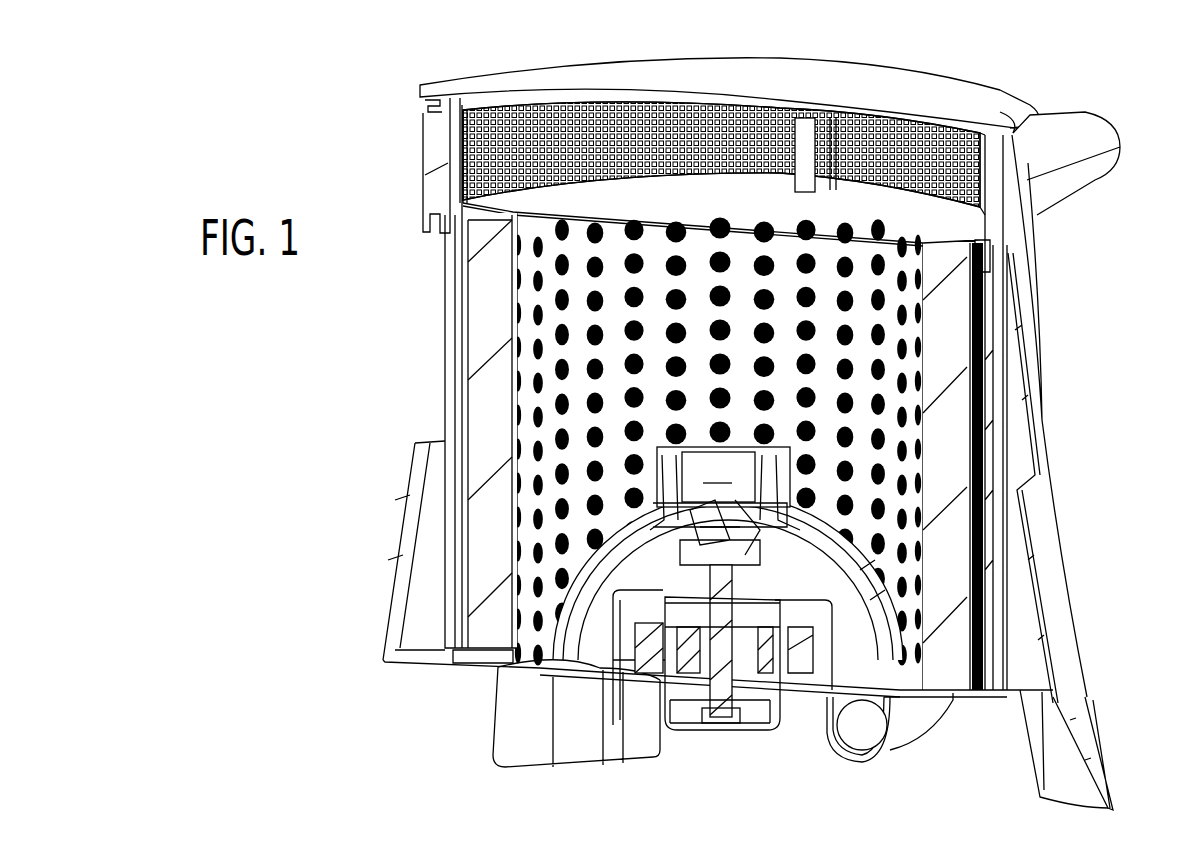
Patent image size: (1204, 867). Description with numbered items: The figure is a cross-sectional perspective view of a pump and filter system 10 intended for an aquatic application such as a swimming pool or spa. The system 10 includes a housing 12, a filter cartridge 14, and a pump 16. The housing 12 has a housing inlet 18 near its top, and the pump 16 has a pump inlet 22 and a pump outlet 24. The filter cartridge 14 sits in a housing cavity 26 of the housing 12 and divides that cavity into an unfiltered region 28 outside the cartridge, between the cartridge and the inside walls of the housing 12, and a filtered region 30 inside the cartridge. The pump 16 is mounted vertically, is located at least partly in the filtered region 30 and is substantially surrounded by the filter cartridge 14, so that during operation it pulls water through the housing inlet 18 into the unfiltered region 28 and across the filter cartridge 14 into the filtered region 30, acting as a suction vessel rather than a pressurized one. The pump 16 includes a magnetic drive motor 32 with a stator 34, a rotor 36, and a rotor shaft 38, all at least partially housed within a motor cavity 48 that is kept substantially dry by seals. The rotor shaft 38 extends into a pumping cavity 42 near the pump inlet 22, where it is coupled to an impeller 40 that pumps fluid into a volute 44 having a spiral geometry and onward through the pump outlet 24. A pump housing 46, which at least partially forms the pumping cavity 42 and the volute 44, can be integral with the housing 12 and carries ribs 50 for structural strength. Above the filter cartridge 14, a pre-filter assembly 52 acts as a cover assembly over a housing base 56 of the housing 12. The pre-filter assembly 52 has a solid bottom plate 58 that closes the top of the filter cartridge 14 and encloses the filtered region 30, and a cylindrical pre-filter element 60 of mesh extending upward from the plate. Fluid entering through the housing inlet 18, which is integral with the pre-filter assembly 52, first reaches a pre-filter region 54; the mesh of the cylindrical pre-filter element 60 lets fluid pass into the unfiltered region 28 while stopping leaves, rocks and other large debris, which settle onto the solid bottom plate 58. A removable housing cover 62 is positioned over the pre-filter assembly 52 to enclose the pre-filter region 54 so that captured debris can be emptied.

The pump and filter system 10 is at (362, 54).
The housing 12 is at (1043, 413).
The filter cartridge 14 is at (950, 600).
The pump 16 is at (525, 655).
The housing inlet 18 is at (1075, 118).
The pump inlet 22 is at (725, 488).
The pump outlet 24 is at (860, 747).
The housing cavity 26 is at (738, 250).
The unfiltered region 28 is at (463, 310).
The filtered region 30 is at (573, 353).
The magnetic drive motor 32 is at (670, 730).
The stator 34 is at (798, 672).
The rotor 36 is at (693, 700).
The rotor shaft 38 is at (720, 712).
The impeller 40 is at (700, 537).
The pumping cavity 42 is at (753, 513).
The volute 44 is at (585, 655).
The pump housing 46 is at (885, 597).
The motor cavity 48 is at (628, 655).
The ribs 50 is at (720, 520).
The pre-filter assembly 52 is at (450, 152).
The pre-filter region 54 is at (592, 150).
The housing base 56 is at (1097, 768).
The solid bottom plate 58 is at (885, 200).
The cylindrical pre-filter element 60 is at (492, 118).
The housing cover 62 is at (693, 70).